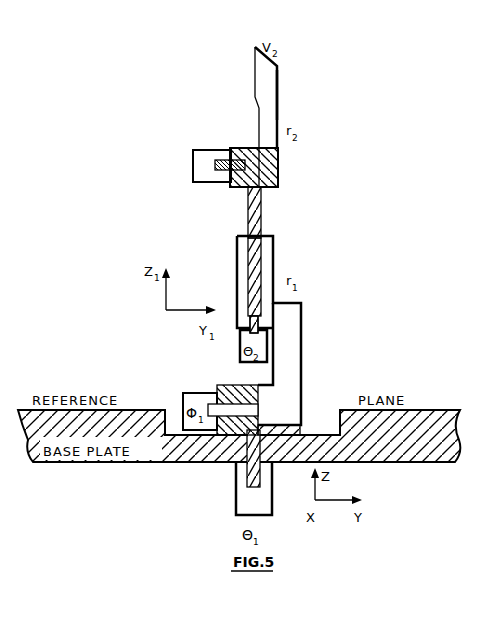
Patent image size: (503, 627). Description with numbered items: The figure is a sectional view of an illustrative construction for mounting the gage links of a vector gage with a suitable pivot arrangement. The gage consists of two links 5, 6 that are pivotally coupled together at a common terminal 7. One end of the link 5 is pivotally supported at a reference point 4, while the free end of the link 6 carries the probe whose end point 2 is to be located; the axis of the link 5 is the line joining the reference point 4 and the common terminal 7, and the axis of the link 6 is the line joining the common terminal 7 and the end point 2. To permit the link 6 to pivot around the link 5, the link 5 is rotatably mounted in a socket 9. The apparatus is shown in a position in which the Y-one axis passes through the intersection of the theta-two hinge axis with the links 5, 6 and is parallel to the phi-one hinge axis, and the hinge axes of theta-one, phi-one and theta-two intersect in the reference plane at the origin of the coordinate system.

The end point 2 is at (255, 47).
The reference point 4 is at (245, 410).
The link 5 is at (261, 210).
The link 6 is at (278, 93).
The common terminal 7 is at (243, 162).
The socket 9 is at (258, 258).